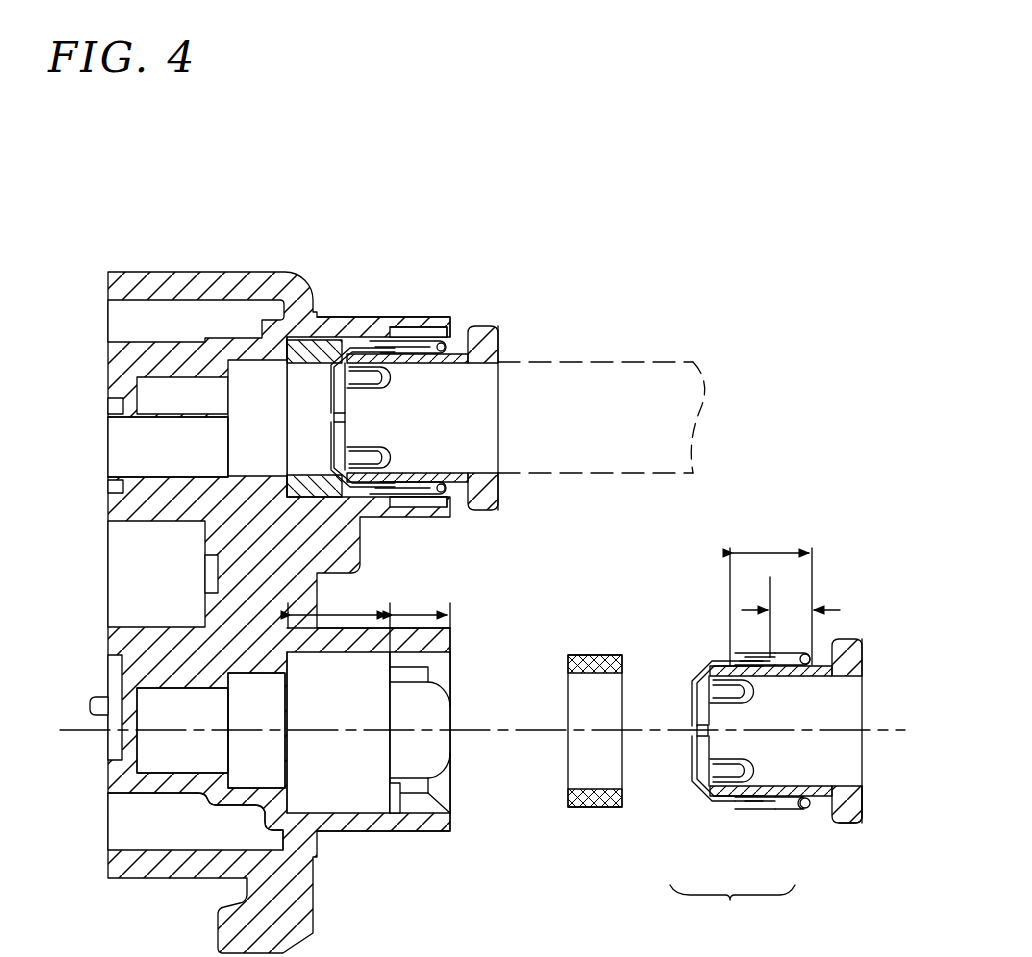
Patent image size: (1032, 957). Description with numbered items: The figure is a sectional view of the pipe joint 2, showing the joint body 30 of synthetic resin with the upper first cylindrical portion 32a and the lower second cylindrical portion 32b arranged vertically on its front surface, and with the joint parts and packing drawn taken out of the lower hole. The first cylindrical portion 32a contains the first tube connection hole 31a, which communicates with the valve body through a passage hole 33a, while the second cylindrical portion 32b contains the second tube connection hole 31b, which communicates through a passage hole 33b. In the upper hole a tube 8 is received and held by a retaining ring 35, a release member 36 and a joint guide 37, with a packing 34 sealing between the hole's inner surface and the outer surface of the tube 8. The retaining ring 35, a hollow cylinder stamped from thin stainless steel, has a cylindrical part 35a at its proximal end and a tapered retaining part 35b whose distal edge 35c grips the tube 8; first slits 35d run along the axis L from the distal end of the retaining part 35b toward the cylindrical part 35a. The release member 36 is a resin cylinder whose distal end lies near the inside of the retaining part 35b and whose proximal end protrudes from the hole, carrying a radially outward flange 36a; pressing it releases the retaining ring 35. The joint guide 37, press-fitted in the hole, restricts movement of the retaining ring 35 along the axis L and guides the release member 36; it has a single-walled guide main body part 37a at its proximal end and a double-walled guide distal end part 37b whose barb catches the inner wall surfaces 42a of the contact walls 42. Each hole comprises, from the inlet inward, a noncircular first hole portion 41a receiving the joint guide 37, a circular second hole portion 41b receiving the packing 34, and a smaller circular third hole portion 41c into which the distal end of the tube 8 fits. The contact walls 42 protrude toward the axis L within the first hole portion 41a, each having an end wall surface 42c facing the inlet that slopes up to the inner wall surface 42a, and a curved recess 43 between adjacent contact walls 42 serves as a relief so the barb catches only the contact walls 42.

The pipe joint 2 is at (228, 208).
The tube 8 is at (605, 372).
The joint body 30 is at (165, 285).
The first tube connection hole 31a is at (351, 337).
The second tube connection hole 31b is at (336, 784).
The first cylindrical portion 32a is at (413, 317).
The second cylindrical portion 32b is at (436, 831).
The passage hole 33a is at (172, 442).
The passage hole 33b is at (160, 748).
The packing 34 is at (296, 340).
The retaining ring 35 is at (563, 640).
The cylindrical part 35a is at (742, 806).
The retaining part 35b is at (698, 802).
The edge 35c is at (692, 680).
The first slits 35d is at (692, 733).
The release member 36 is at (639, 557).
The flange 36a is at (851, 792).
The joint guide 37 is at (643, 621).
The guide main body part 37a is at (801, 655).
The guide distal end part 37b is at (740, 652).
The first hole portion 41a is at (420, 716).
The second hole portion 41b is at (303, 778).
The third hole portion 41c is at (255, 768).
The contact walls 42 is at (410, 672).
The inner wall surfaces 42a is at (400, 820).
The end wall surface 42c is at (437, 677).
The recess 43 is at (436, 330).
The axis L is at (489, 733).